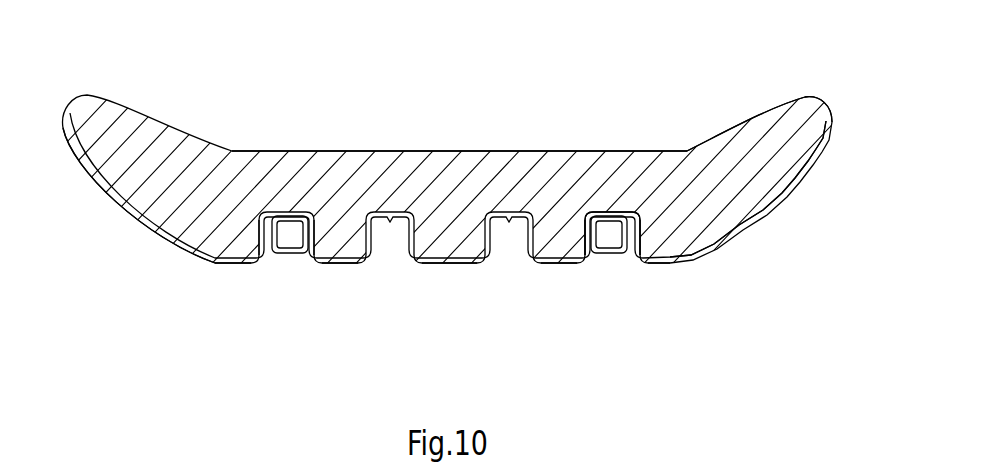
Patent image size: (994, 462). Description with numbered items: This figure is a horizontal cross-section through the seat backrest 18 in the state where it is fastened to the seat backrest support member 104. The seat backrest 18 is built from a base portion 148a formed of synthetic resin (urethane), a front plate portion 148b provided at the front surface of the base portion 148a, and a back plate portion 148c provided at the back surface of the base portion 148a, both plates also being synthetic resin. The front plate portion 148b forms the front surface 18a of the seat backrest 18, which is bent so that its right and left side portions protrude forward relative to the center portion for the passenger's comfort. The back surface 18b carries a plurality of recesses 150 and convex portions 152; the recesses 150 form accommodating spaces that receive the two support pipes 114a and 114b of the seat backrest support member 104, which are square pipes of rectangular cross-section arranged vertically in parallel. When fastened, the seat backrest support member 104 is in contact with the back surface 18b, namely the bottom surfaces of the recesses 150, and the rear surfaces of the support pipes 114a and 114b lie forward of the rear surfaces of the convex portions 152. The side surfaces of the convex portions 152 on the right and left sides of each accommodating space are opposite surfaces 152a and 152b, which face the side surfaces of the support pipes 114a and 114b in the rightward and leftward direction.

The seat backrest 18 is at (292, 136).
The front surface 18a is at (447, 150).
The back surface 18b is at (143, 225).
The seat backrest support member 104 is at (609, 254).
The support pipe 114a is at (287, 254).
The support pipe 114b is at (603, 254).
The base portion 148a is at (751, 147).
The front plate portion 148b is at (823, 102).
The back plate portion 148c is at (806, 176).
The recesses 150 is at (267, 213).
The convex portions 152 is at (220, 263).
The opposite surface 152a is at (315, 258).
The opposite surface 152b is at (259, 258).